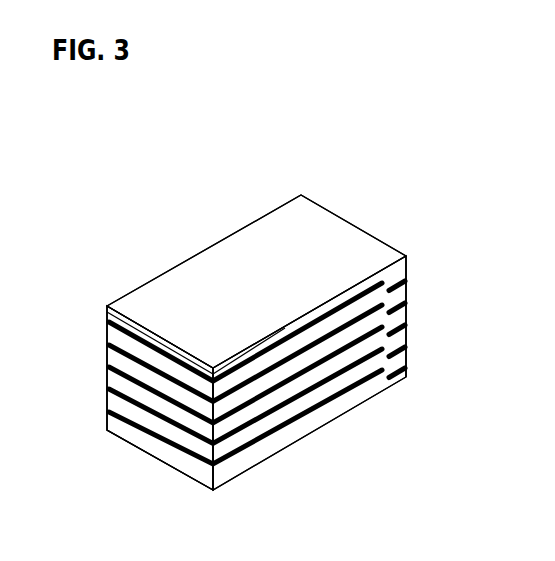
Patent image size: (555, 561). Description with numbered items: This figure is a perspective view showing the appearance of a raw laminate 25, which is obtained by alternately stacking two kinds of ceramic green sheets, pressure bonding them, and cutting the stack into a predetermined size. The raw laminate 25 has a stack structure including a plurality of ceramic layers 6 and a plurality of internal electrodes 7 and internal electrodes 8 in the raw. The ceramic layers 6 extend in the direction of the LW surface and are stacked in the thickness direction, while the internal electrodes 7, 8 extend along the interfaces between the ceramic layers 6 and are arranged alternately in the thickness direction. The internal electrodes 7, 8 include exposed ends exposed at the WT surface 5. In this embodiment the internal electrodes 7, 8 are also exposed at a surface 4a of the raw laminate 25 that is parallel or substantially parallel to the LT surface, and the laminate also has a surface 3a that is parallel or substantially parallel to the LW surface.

The raw laminate 25 is at (142, 181).
The surface parallel to the LW surface 3a is at (347, 237).
The surface parallel to the LT surface 4a is at (401, 362).
The WT surface 5 is at (111, 401).
The ceramic layers 6 is at (157, 425).
The internal electrodes 7 is at (197, 438).
The internal electrodes 8 is at (334, 388).